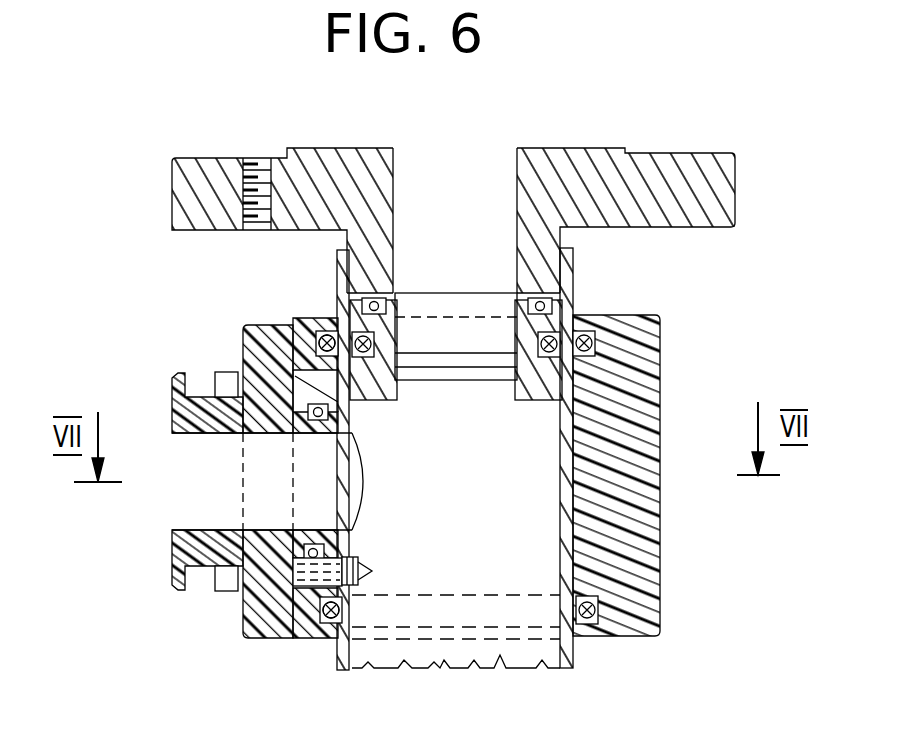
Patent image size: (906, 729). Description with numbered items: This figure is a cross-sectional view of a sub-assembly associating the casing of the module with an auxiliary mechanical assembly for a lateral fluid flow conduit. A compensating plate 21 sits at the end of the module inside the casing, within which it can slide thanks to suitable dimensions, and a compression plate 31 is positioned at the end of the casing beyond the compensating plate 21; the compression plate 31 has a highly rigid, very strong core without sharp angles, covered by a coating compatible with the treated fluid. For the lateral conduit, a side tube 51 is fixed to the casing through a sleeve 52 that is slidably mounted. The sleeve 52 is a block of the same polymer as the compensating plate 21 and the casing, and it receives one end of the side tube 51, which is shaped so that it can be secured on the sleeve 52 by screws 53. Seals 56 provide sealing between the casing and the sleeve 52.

The compression plate 31 is at (340, 175).
The compensating plate 21 is at (565, 304).
The side tube 51 is at (172, 553).
The sleeve 52 is at (630, 603).
The screws 53 is at (226, 385).
The seals 56 is at (326, 327).